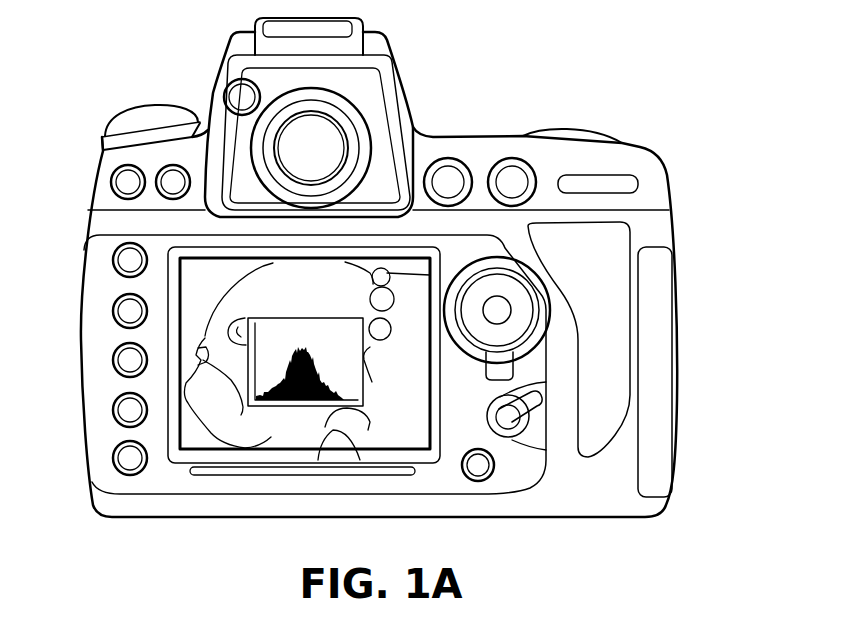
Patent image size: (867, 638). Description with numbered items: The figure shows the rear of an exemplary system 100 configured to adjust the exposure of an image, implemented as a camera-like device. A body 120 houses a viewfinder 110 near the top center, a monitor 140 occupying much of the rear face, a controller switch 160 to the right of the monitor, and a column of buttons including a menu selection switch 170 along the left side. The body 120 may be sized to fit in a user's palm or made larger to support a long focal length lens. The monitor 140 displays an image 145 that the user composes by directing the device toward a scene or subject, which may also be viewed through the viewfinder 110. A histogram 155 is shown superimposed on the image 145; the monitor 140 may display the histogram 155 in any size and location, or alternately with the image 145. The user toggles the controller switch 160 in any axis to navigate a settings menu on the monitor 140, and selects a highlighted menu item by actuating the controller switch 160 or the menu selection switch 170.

The system 100 is at (622, 113).
The viewfinder 110 is at (289, 160).
The body 120 is at (677, 333).
The monitor 140 is at (383, 430).
The image 145 is at (213, 427).
The histogram 155 is at (307, 333).
The controller switch 160 is at (523, 307).
The menu selection switch 170 is at (113, 466).